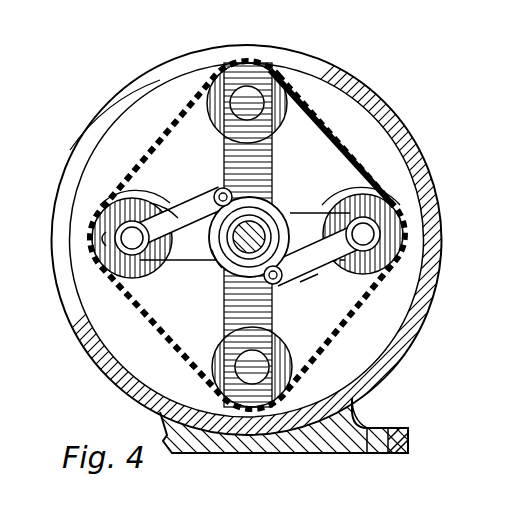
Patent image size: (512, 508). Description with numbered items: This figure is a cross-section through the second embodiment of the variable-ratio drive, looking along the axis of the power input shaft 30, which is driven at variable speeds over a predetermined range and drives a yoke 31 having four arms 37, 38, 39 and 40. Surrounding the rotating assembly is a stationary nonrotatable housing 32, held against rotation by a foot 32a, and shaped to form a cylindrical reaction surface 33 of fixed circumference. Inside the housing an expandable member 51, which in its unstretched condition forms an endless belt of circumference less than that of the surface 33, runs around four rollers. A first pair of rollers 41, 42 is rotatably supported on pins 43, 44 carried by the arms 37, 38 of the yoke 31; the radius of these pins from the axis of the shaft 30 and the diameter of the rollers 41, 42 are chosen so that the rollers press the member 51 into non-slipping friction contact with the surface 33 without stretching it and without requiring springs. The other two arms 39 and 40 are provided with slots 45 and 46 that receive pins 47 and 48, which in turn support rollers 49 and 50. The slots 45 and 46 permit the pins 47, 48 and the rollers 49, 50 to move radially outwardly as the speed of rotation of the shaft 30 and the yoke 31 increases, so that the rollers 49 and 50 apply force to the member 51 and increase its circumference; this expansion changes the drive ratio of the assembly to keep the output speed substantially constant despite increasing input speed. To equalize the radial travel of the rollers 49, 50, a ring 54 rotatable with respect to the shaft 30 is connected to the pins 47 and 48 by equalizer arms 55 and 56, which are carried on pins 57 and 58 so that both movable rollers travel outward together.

The power input shaft 30 is at (270, 240).
The yoke 31 is at (284, 212).
The housing 32 is at (430, 213).
The foot 32a is at (305, 453).
The cylindrical reaction surface 33 is at (352, 408).
The arm 37 is at (226, 190).
The arm 38 is at (245, 295).
The arm 39 is at (182, 262).
The arm 40 is at (280, 272).
The roller 41 is at (250, 60).
The roller 42 is at (250, 418).
The pin 43 is at (240, 96).
The pin 44 is at (258, 368).
The slot 45 is at (108, 243).
The slot 46 is at (372, 241).
The pin 47 is at (150, 268).
The pin 48 is at (335, 266).
The roller 49 is at (162, 200).
The roller 50 is at (345, 206).
The expandable member 51 is at (322, 130).
The ring 54 is at (220, 254).
The equalizer arm 55 is at (171, 213).
The equalizer arm 56 is at (306, 284).
The pin 57 is at (213, 201).
The pin 58 is at (276, 284).